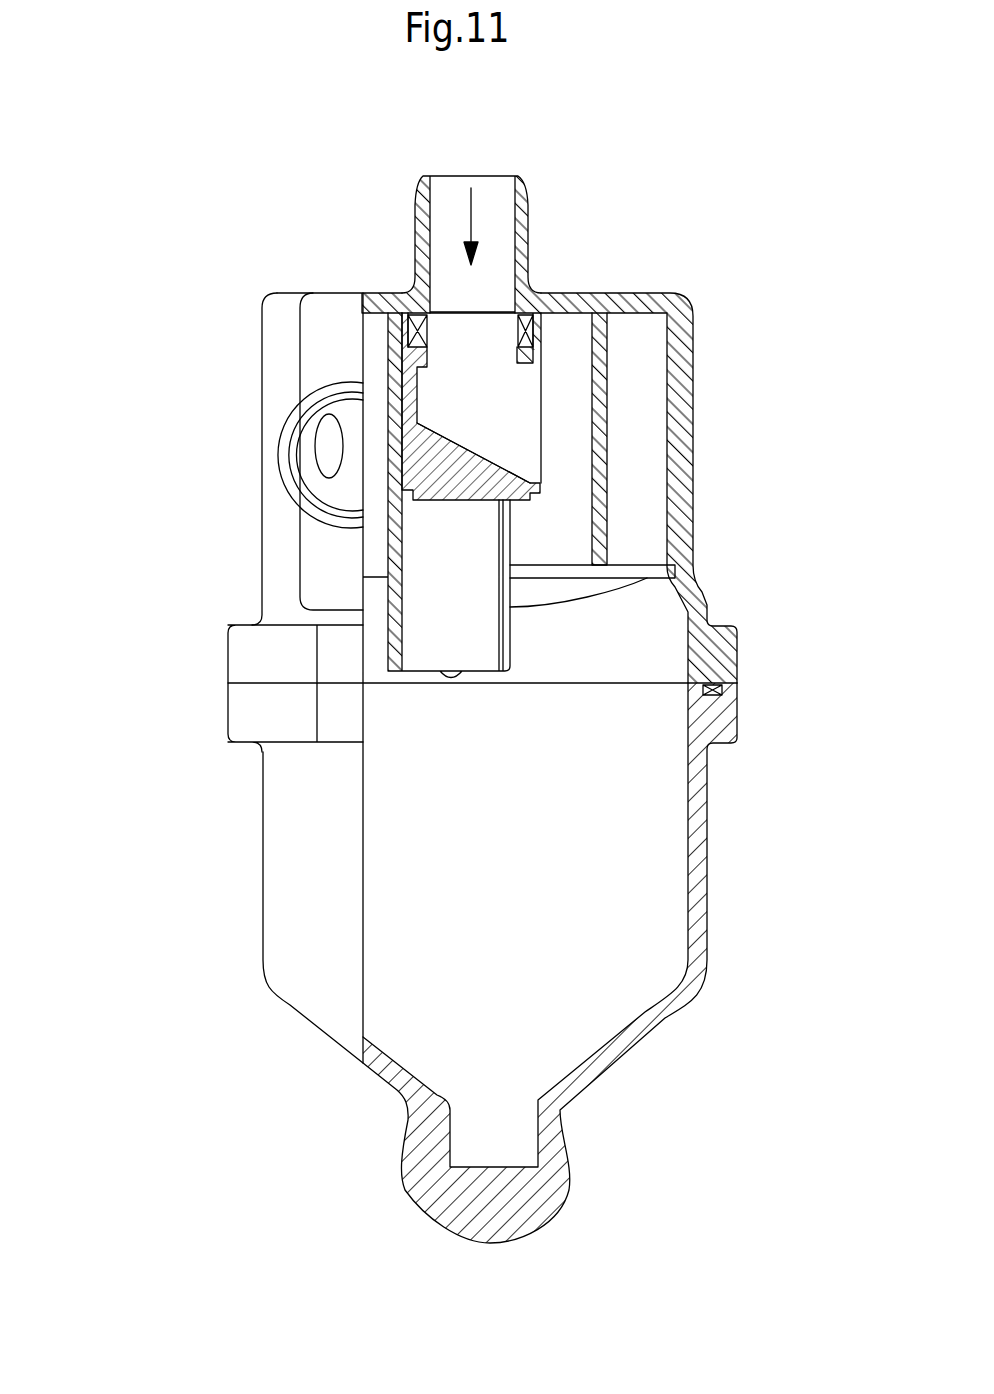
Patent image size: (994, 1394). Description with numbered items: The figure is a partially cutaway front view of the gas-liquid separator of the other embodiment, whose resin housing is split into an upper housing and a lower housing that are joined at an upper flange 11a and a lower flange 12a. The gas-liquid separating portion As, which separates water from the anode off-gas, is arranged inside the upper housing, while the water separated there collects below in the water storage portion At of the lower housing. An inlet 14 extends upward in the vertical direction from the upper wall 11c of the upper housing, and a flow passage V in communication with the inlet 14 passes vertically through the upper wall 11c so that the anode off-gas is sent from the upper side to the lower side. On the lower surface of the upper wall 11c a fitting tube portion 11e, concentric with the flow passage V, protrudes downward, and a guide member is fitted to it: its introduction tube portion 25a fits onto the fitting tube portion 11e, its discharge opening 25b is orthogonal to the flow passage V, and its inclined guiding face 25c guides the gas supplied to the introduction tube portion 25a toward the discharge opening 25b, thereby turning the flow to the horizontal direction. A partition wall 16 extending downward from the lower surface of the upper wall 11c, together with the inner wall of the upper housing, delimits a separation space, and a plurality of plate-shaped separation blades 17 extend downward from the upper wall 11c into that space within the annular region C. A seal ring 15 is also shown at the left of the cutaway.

The inlet 14 is at (525, 198).
The flow passage V is at (428, 197).
The introduction tube portion 25a is at (412, 333).
The fitting tube portion 11e is at (538, 343).
The upper wall 11c is at (622, 297).
The seal ring 15 is at (337, 423).
The discharge opening 25b is at (540, 428).
The separation blade 17 is at (600, 467).
The partition wall 16 is at (390, 550).
The guiding face 25c is at (450, 440).
The upper flange 11a is at (237, 655).
The lower flange 12a is at (240, 716).
The gas-liquid separating portion As is at (577, 587).
The annular region C is at (549, 547).
The water storage portion At is at (632, 909).